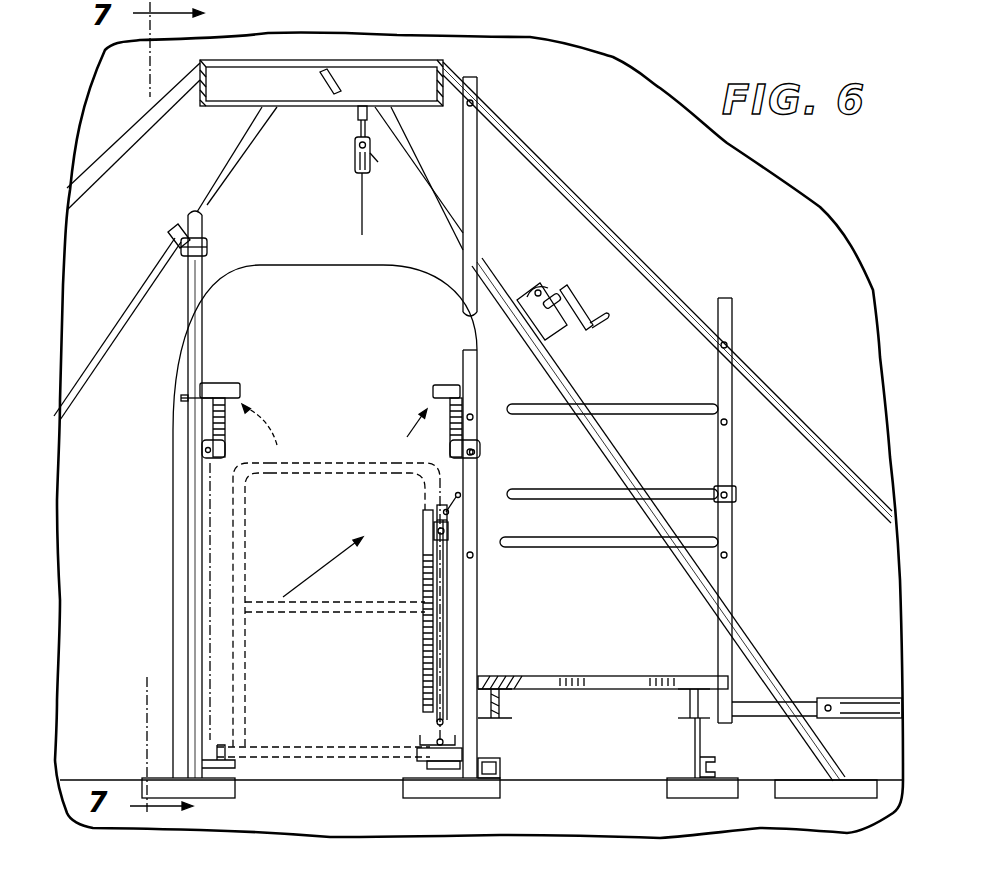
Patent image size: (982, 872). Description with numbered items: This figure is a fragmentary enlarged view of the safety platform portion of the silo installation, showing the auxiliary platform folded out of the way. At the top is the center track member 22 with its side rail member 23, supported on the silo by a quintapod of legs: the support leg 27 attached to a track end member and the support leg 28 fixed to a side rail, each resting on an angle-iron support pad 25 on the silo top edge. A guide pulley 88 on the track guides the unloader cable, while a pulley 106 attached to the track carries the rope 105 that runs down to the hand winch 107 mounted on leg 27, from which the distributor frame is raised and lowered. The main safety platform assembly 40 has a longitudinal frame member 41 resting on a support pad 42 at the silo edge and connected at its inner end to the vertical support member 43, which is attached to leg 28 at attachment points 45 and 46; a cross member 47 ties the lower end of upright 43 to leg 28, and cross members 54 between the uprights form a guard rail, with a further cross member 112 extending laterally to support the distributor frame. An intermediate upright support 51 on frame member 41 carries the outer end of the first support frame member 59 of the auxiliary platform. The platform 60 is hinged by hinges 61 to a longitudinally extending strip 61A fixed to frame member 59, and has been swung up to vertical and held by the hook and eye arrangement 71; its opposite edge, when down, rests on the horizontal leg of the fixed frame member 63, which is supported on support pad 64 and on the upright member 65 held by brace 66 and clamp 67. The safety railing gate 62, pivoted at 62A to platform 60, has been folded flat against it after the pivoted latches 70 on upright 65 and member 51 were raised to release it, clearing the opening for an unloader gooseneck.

The center track member 22 is at (290, 56).
The side rail member 23 is at (450, 65).
The support pad 25 is at (857, 787).
The support leg 27 is at (100, 343).
The support leg 28 is at (660, 267).
The main safety platform assembly 40 is at (676, 643).
The frame member 41 is at (682, 700).
The support pad 42 is at (402, 783).
The vertical support member 43 is at (732, 577).
The attachment point 45 is at (726, 345).
The attachment point 46 is at (478, 103).
The cross member 47 is at (807, 704).
The intermediate upright support 51 is at (477, 483).
The cross member 54 is at (693, 417).
The first support frame member 59 is at (450, 767).
The platform 60 is at (340, 743).
The hinge 61 is at (440, 743).
The longitudinally extending strip 61A is at (460, 753).
The safety railing gate 62 is at (324, 468).
The pivot 62A is at (447, 547).
The frame member 63 is at (237, 766).
The support pad 64 is at (175, 782).
The upright member 65 is at (203, 555).
The brace 66 is at (203, 280).
The clamp 67 is at (207, 247).
The pivoted latch 70 is at (237, 383).
The hook and eye arrangement 71 is at (432, 495).
The guide pulley 88 is at (326, 58).
The rope 105 is at (362, 195).
The pulley 106 is at (353, 157).
The hand winch 107 is at (537, 285).
The cross member 112 is at (702, 490).